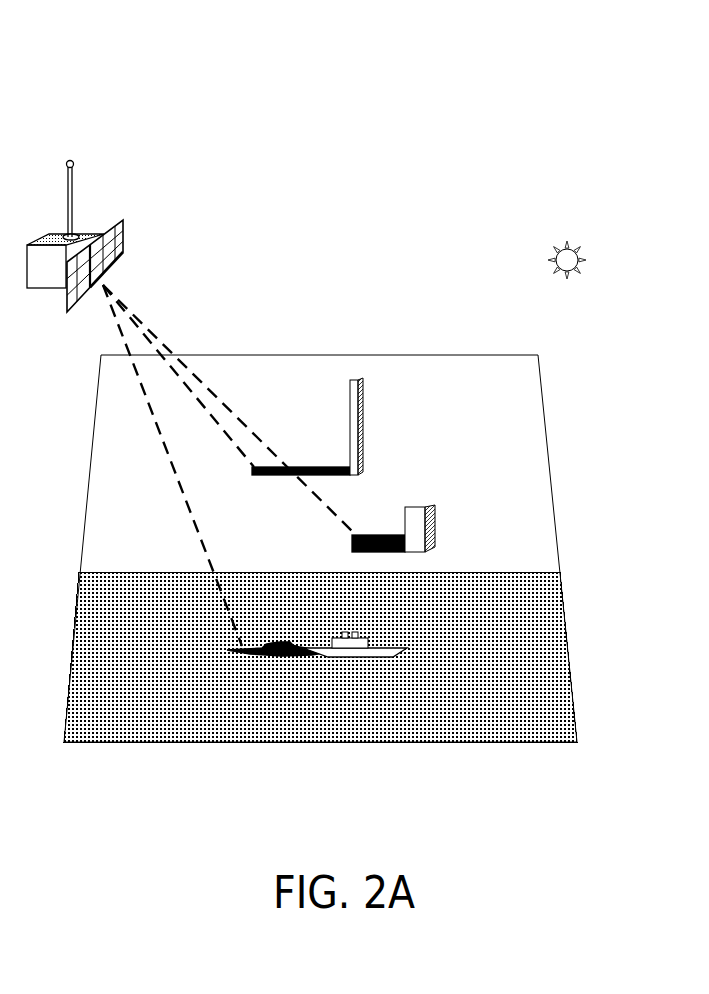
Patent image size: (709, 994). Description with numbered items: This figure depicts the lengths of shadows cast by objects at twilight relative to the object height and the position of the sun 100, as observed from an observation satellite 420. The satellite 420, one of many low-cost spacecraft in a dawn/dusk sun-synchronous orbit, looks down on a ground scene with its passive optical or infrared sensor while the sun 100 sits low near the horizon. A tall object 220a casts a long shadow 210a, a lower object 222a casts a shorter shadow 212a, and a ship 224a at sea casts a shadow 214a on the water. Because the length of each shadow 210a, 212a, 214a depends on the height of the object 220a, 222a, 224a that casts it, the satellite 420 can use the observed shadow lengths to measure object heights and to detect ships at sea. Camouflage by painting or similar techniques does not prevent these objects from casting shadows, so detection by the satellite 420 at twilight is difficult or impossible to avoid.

The observation satellite 420 is at (120, 260).
The sun 100 is at (587, 262).
The shadow 210a is at (298, 468).
The object 220a is at (356, 393).
The shadow 212a is at (387, 535).
The object 222a is at (437, 520).
The shadow 214a is at (290, 640).
The object 224a is at (370, 640).